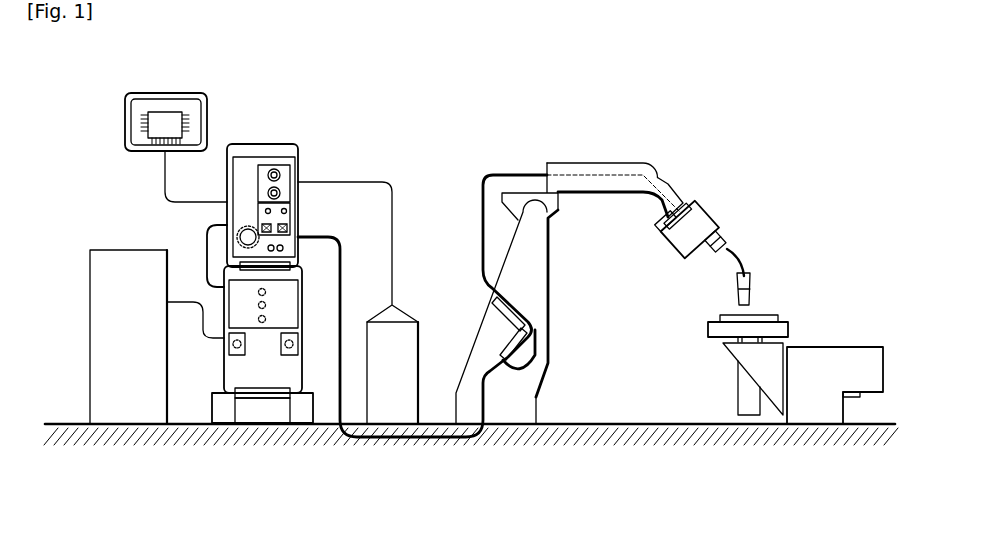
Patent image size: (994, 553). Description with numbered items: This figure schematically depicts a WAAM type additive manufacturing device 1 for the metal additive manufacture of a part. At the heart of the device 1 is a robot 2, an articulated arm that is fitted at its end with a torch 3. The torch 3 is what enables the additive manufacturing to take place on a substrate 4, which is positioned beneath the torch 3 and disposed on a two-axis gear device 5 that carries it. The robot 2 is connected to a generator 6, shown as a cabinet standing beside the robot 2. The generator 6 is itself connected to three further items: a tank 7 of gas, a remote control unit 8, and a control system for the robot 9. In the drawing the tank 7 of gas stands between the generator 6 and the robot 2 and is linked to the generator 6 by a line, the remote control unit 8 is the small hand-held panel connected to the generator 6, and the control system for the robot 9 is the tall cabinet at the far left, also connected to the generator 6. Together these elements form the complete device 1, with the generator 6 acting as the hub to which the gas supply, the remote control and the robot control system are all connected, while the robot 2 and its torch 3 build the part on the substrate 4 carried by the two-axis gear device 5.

The additive manufacturing device 1 is at (526, 127).
The robot 2 is at (645, 153).
The torch 3 is at (732, 252).
The substrate 4 is at (722, 306).
The two-axis gear device 5 is at (722, 387).
The generator 6 is at (264, 141).
The tank of gas 7 is at (419, 341).
The remote control unit 8 is at (125, 123).
The control system for the robot 9 is at (90, 337).